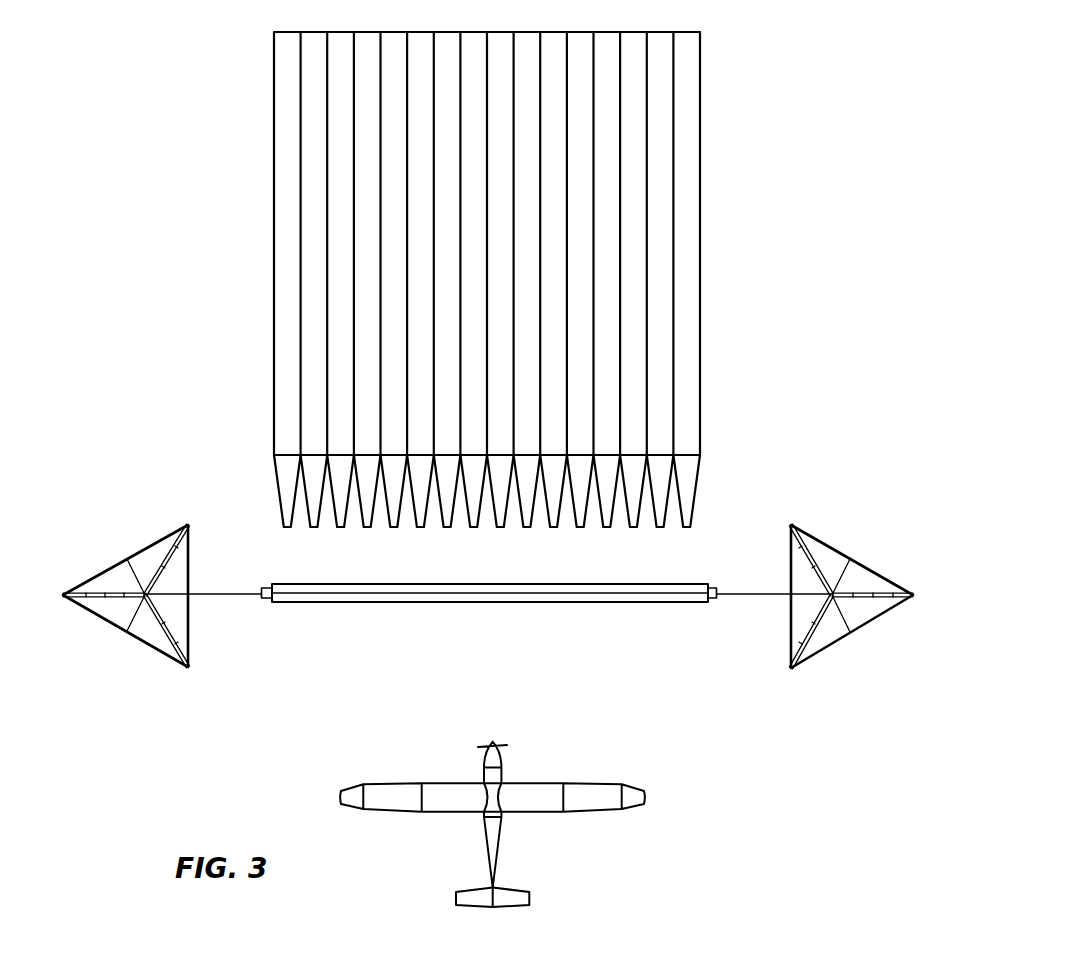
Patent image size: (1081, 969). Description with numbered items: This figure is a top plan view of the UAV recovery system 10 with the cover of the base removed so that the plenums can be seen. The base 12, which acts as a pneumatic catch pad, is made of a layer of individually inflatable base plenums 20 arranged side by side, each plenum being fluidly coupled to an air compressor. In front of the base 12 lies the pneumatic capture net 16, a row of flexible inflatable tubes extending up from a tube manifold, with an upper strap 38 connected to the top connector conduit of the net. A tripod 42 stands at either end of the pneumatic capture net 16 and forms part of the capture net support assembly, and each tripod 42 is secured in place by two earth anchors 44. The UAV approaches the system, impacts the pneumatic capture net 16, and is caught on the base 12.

The UAV recovery system 10 is at (984, 200).
The base 12 is at (724, 227).
The pneumatic capture net 16 is at (704, 572).
The base plenum 20 is at (687, 155).
The upper strap 38 is at (731, 599).
The tripod 42 is at (926, 585).
The earth anchor 44 is at (848, 620).
The unmanned aerial vehicle UAV is at (565, 765).